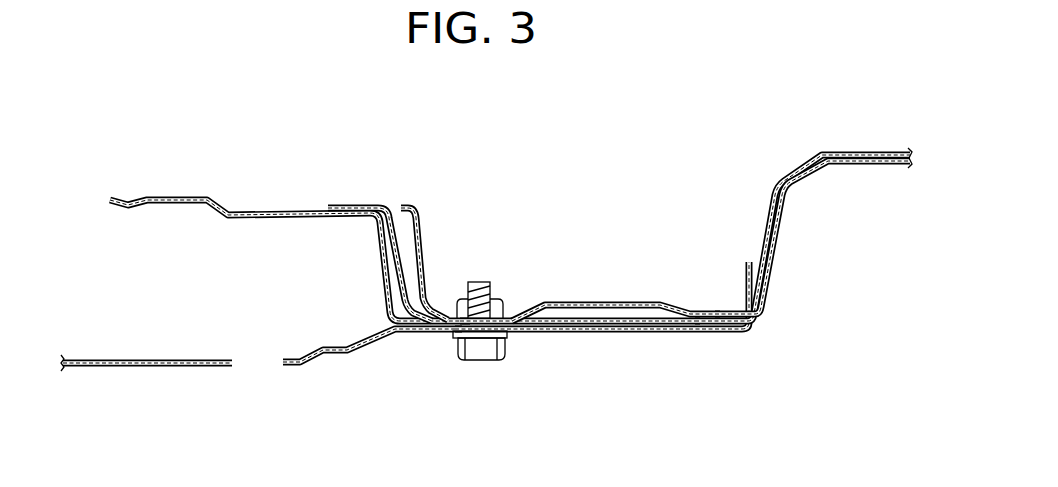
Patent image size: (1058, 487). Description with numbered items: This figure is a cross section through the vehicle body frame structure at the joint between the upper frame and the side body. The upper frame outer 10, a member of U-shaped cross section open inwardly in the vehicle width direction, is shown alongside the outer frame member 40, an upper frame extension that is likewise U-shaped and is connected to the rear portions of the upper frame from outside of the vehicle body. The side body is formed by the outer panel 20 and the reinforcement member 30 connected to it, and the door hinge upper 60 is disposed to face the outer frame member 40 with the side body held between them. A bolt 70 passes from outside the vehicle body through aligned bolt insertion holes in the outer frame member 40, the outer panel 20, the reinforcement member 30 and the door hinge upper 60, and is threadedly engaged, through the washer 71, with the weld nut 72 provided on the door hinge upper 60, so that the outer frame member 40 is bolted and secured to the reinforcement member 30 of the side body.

The upper frame outer 10 is at (142, 364).
The outer panel 20 is at (656, 331).
The reinforcement member 30 is at (778, 188).
The outer frame member 40 is at (372, 339).
The door hinge upper 60 is at (612, 303).
The bolt 70 is at (480, 360).
The washer 71 is at (506, 336).
The weld nut 72 is at (467, 282).